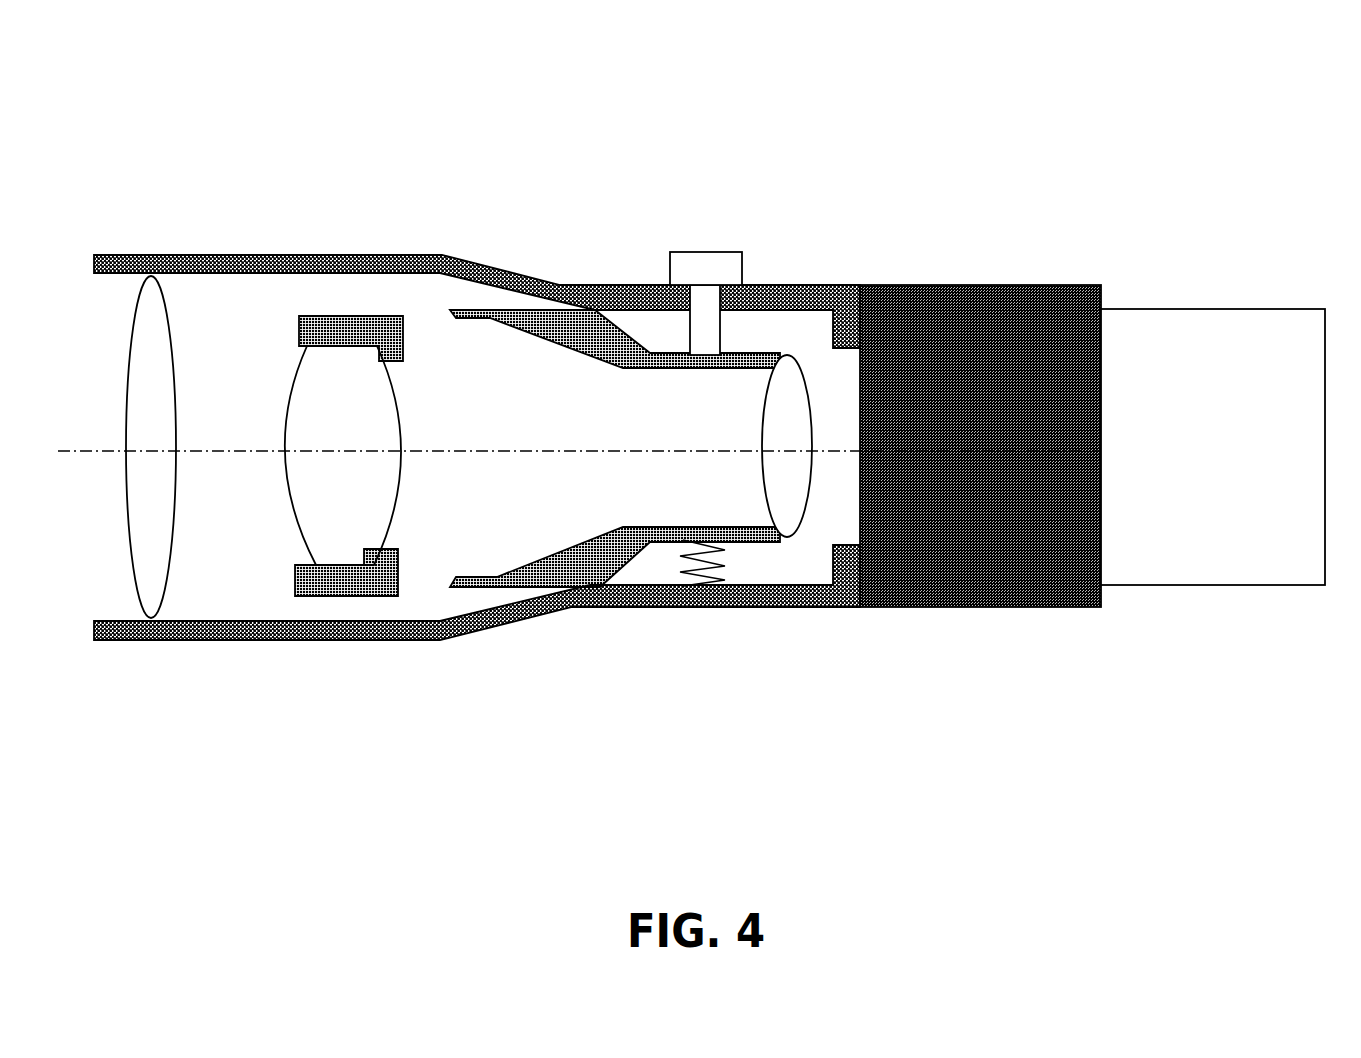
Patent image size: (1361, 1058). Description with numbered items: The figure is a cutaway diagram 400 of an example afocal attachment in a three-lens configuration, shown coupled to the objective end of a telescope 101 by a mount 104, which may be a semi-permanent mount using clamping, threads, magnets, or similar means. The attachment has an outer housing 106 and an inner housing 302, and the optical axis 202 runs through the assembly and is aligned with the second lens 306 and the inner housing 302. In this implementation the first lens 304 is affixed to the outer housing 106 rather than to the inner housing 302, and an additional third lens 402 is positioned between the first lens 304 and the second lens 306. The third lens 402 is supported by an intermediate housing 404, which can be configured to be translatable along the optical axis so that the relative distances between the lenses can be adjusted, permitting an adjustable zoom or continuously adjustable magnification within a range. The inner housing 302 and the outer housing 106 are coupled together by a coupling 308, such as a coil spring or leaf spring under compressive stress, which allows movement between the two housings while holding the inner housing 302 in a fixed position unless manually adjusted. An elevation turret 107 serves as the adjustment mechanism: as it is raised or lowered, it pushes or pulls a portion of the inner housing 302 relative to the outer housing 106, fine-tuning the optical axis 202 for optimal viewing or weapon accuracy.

The cutaway diagram 400 is at (240, 113).
The outer housing 106 is at (523, 620).
The inner housing 302 is at (743, 540).
The third lens 402 is at (345, 529).
The intermediate housing 404 is at (310, 596).
The first lens 304 is at (152, 548).
The second lens 306 is at (785, 528).
The coupling 308 is at (695, 575).
The optical axis 202 is at (102, 450).
The mount 104 is at (1040, 583).
The telescope 101 is at (1280, 628).
The elevation turret 107 is at (705, 250).